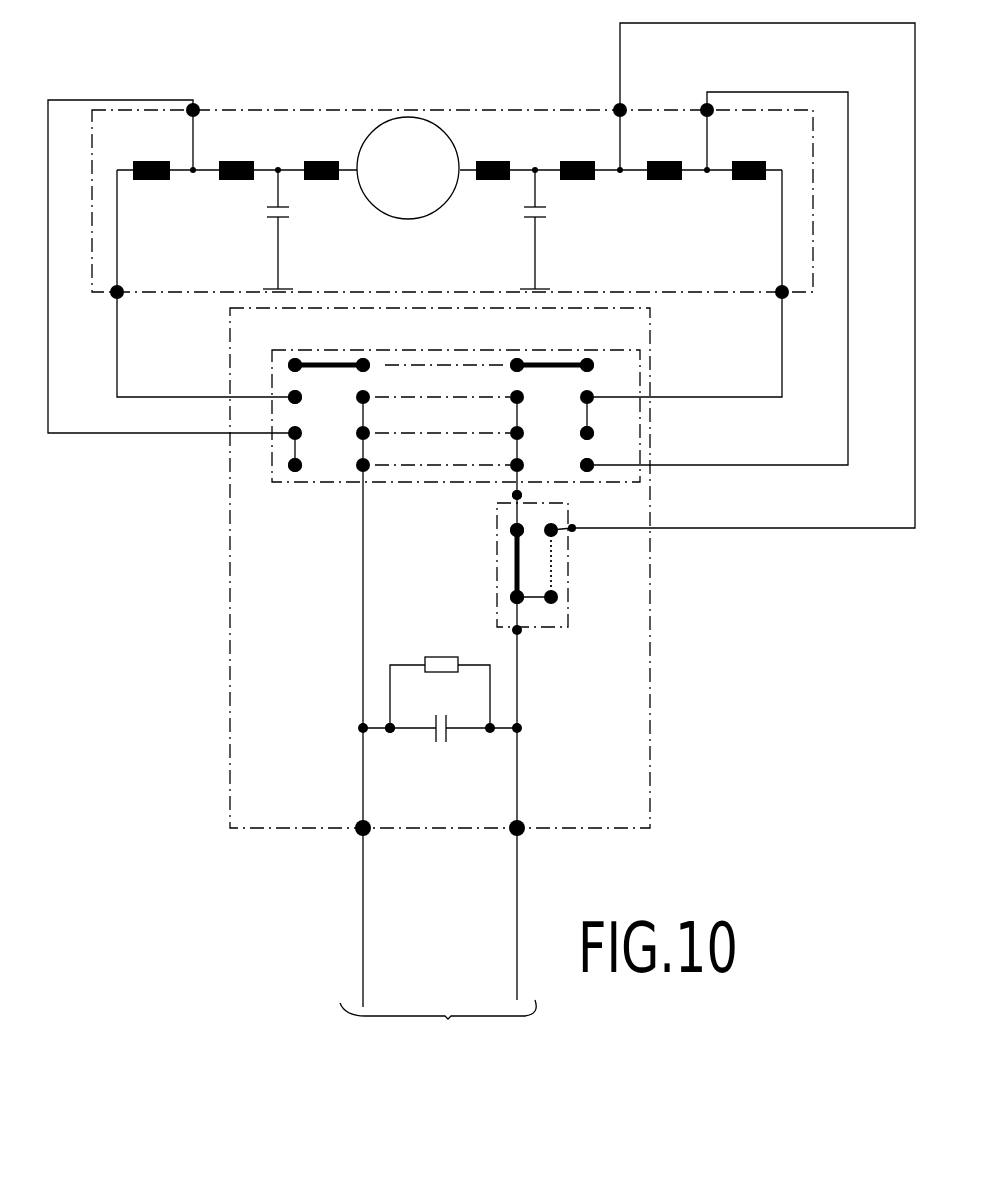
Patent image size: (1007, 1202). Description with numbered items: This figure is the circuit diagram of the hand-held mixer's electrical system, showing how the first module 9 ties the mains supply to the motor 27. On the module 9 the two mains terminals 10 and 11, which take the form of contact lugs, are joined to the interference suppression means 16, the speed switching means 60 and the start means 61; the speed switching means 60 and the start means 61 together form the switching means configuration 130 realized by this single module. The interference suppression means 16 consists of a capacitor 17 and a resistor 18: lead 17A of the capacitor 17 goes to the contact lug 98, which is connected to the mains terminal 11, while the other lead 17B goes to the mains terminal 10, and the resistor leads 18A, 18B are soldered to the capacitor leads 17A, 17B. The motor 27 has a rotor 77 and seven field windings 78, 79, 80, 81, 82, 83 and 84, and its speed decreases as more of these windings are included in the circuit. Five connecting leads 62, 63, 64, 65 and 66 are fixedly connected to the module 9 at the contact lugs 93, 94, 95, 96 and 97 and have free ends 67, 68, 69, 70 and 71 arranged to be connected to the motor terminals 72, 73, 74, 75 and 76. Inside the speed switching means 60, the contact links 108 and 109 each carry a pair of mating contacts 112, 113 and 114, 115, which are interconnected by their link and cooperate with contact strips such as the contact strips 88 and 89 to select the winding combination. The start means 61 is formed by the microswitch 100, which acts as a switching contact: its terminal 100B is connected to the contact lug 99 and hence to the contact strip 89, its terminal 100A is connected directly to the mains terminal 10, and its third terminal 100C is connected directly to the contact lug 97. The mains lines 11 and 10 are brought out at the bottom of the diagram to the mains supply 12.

The first module 9 is at (238, 838).
The mains terminal 10 is at (518, 640).
The mains terminal 11 is at (362, 835).
The mains supply 12 is at (448, 1017).
The interference suppression means 16 is at (427, 650).
The capacitor 17 is at (445, 745).
The lead of the capacitor 17A is at (390, 735).
The lead of the capacitor 17B is at (517, 735).
The resistor 18 is at (427, 658).
The lead of the resistor 18A is at (390, 700).
The lead of the resistor 18B is at (490, 690).
The motor 27 is at (390, 100).
The speed switching means 60 is at (272, 490).
The start means 61 is at (572, 638).
The connecting lead 62 is at (195, 397).
The connecting lead 63 is at (705, 393).
The connecting lead 64 is at (185, 435).
The connecting lead 65 is at (725, 462).
The connecting lead 66 is at (778, 527).
The free end 67 is at (120, 296).
The free end 68 is at (781, 297).
The free end 69 is at (196, 110).
The free end 70 is at (705, 108).
The free end 71 is at (618, 108).
The motor terminal 72 is at (120, 290).
The motor terminal 73 is at (780, 290).
The motor terminal 74 is at (200, 115).
The motor terminal 75 is at (710, 114).
The motor terminal 76 is at (618, 114).
The rotor 77 is at (408, 212).
The field winding 78 is at (160, 180).
The field winding 79 is at (246, 180).
The field winding 80 is at (330, 180).
The field winding 81 is at (488, 180).
The field winding 82 is at (578, 180).
The field winding 83 is at (660, 180).
The field winding 84 is at (735, 180).
The contact strip 88 is at (363, 522).
The contact strip 89 is at (515, 493).
The contact lug 93 is at (297, 402).
The contact lug 94 is at (584, 400).
The contact lug 95 is at (298, 465).
The contact lug 96 is at (584, 465).
The contact lug 97 is at (575, 532).
The contact lug 98 is at (362, 728).
The contact lug 99 is at (515, 497).
The microswitch 100 is at (497, 562).
The terminal of the microswitch 100A is at (522, 601).
The terminal of the microswitch 100B is at (528, 523).
The third terminal of the microswitch 100C is at (553, 565).
The contact link 108 is at (350, 360).
The contact link 109 is at (560, 360).
The mating contact 112 is at (292, 360).
The mating contact 113 is at (363, 360).
The mating contact 114 is at (512, 360).
The mating contact 115 is at (590, 360).
The switching means configuration 130 is at (578, 680).